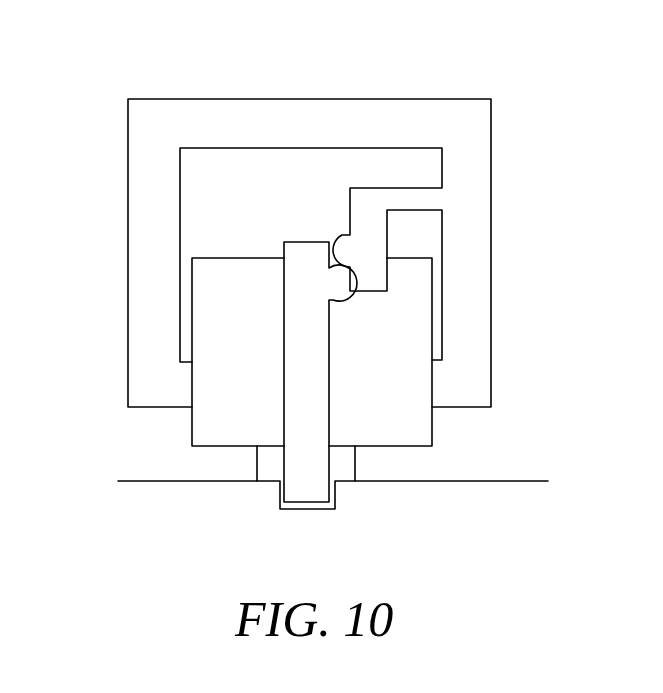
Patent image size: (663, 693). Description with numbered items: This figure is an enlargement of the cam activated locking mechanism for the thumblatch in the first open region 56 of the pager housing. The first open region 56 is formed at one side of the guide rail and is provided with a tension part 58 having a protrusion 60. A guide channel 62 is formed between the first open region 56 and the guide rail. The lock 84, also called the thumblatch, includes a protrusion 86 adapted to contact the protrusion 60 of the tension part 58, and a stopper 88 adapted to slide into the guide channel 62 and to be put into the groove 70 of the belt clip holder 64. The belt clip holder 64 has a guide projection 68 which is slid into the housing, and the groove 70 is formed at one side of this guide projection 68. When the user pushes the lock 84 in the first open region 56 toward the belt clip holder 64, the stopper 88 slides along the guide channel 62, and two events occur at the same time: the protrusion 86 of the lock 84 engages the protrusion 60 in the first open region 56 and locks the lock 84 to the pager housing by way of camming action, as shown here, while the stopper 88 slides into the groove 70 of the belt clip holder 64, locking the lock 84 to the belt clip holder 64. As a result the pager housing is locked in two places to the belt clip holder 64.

The first open region 56 is at (465, 197).
The tension part 58 is at (406, 198).
The protrusion 60 is at (338, 247).
The guide channel 62 is at (355, 472).
The belt clip holder 64 is at (258, 556).
The guide projection 68 is at (517, 481).
The groove 70 is at (336, 510).
The lock 84 is at (203, 438).
The protrusion 86 is at (335, 285).
The stopper 88 is at (295, 361).